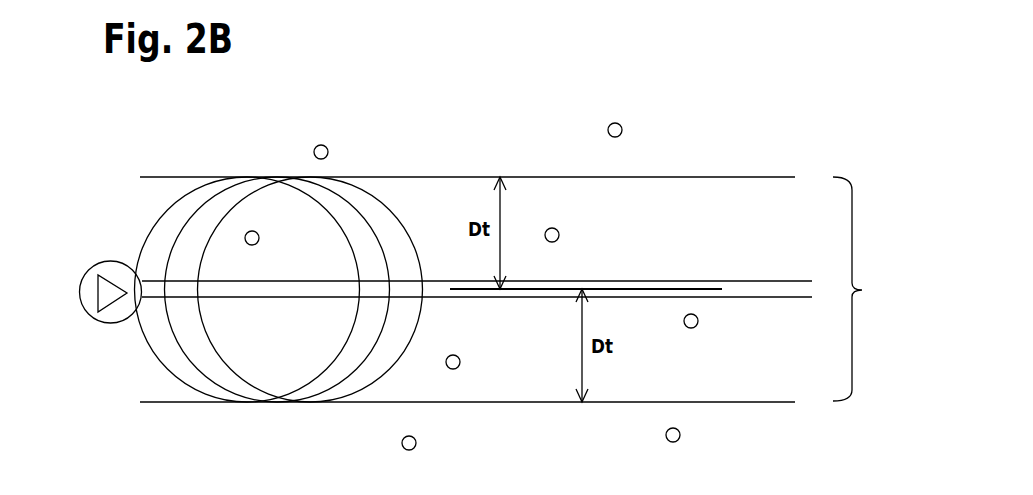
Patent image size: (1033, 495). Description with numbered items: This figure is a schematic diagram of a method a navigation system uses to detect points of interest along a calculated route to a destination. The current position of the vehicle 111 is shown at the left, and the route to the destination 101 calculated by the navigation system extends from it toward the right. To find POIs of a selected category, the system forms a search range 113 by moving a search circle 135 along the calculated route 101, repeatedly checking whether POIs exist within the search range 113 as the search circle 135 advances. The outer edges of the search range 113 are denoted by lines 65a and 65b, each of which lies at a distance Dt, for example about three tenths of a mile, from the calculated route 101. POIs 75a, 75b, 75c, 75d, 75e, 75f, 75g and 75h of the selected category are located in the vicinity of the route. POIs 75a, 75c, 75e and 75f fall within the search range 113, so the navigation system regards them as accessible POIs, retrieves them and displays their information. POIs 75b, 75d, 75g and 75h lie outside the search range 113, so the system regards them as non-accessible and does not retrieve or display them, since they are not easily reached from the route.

The current position of the vehicle 111 is at (104, 262).
The search circle 135 is at (157, 222).
The route to the destination 101 is at (765, 285).
The line 65a is at (720, 177).
The line 65b is at (738, 402).
The search range 113 is at (862, 291).
The POI 75a is at (258, 234).
The POI 75b is at (414, 449).
The POI 75c is at (459, 357).
The POI 75d is at (679, 440).
The POI 75e is at (558, 230).
The POI 75f is at (696, 327).
The POI 75g is at (327, 147).
The POI 75h is at (621, 125).